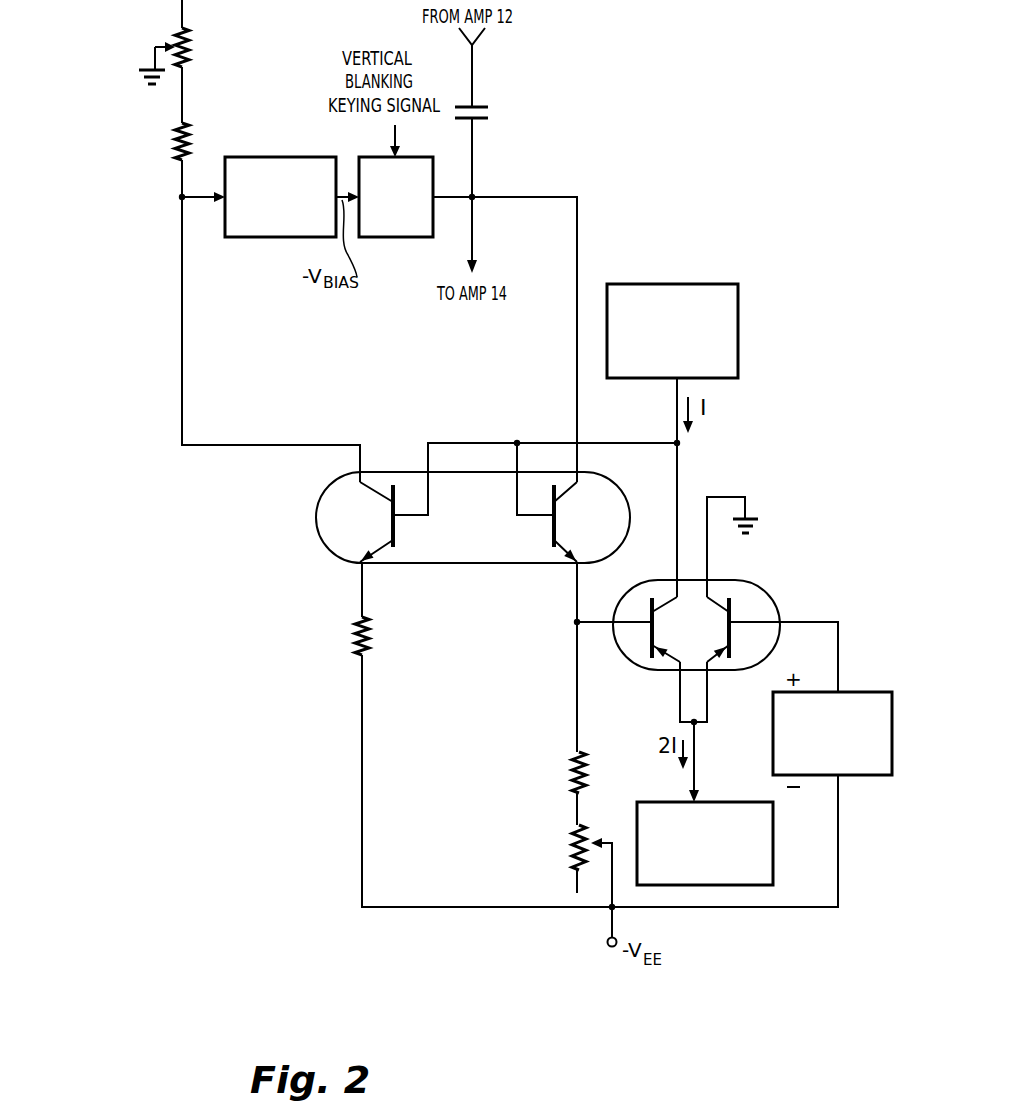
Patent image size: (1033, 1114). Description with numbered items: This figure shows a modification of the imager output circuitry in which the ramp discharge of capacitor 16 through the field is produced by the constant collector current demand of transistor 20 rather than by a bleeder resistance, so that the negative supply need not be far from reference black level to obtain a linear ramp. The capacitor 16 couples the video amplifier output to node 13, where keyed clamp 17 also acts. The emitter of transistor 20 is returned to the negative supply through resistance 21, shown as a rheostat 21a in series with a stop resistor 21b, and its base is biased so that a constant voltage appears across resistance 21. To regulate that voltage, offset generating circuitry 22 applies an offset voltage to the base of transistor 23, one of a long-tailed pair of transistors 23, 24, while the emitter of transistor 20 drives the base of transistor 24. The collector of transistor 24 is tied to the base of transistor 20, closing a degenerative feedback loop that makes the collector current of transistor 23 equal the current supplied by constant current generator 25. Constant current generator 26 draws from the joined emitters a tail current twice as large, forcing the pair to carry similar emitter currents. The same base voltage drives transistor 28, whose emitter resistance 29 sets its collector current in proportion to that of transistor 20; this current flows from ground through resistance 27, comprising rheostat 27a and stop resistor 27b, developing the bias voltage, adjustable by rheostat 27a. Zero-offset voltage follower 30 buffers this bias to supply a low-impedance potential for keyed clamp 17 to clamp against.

The node 13 is at (475, 194).
The capacitor 16 is at (488, 114).
The keyed clamp 17 is at (422, 238).
The transistor 20 is at (594, 537).
The resistance 21 is at (547, 809).
The rheostat 21a is at (564, 847).
The stop resistor 21b is at (563, 772).
The offset generating circuitry 22 is at (848, 777).
The transistor 23 is at (727, 641).
The transistor 24 is at (679, 641).
The constant current generator 25 is at (740, 330).
The constant current generator 26 is at (775, 872).
The resistance 27 is at (218, 93).
The rheostat 27a is at (201, 47).
The stop resistor 27b is at (200, 141).
The transistor 28 is at (370, 537).
The resistance 29 is at (356, 637).
The zero-offset voltage follower 30 is at (242, 238).